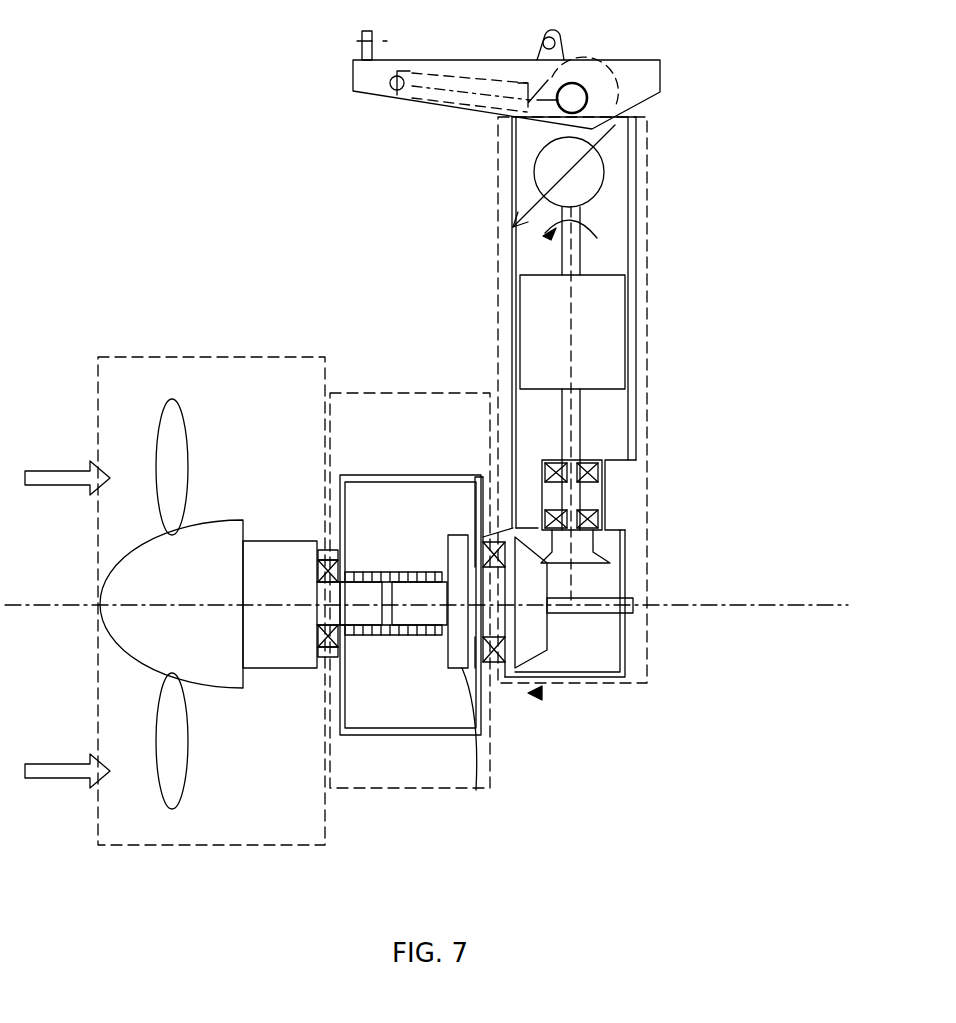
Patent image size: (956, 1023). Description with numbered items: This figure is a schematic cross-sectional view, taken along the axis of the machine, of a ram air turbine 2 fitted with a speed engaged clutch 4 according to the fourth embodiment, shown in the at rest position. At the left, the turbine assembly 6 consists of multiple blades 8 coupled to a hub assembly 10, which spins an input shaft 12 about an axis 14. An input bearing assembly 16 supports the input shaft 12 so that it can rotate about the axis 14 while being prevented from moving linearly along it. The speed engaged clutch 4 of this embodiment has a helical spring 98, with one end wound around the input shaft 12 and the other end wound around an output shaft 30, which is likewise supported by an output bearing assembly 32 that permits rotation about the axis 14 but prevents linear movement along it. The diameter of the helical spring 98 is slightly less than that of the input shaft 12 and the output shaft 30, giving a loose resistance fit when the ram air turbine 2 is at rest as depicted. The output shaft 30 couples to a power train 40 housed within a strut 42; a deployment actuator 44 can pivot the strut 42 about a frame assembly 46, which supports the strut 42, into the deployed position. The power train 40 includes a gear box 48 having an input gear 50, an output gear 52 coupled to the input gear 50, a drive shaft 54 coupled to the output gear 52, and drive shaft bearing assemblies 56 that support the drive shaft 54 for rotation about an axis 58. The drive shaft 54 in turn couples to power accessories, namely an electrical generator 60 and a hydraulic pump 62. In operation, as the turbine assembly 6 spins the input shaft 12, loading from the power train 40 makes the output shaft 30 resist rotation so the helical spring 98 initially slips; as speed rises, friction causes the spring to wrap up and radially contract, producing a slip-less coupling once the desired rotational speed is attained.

The ram air turbine 2 is at (118, 74).
The speed engaged clutch 4 is at (393, 390).
The turbine assembly 6 is at (200, 344).
The blades 8 is at (170, 400).
The hub assembly 10 is at (281, 540).
The input shaft 12 is at (391, 603).
The axis 14 is at (720, 605).
The input bearing assembly 16 is at (326, 550).
The output shaft 30 is at (419, 603).
The output bearing assembly 32 is at (493, 640).
The power train 40 is at (648, 222).
The strut 42 is at (512, 274).
The deployment actuator 44 is at (470, 100).
The frame assembly 46 is at (660, 86).
The gear box 48 is at (625, 653).
The input gear 50 is at (553, 635).
The output gear 52 is at (597, 545).
The drive shaft 54 is at (580, 493).
The drive shaft bearing assemblies 56 is at (597, 463).
The axis 58 is at (575, 356).
The electrical generator 60 is at (597, 332).
The hydraulic pump 62 is at (590, 175).
The helical spring 98 is at (343, 643).